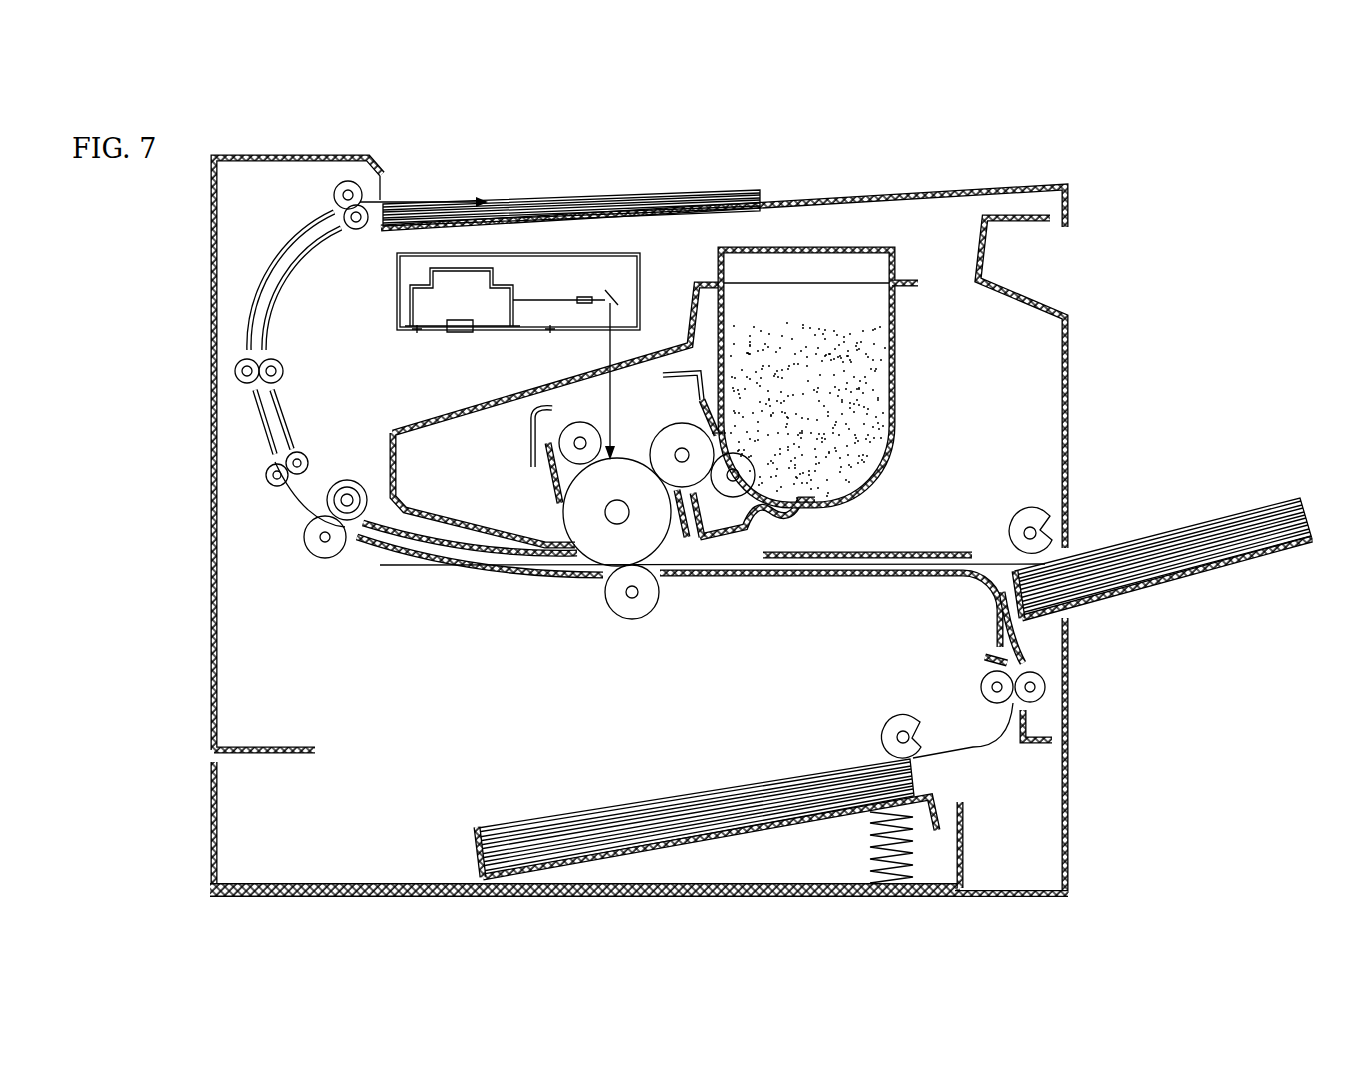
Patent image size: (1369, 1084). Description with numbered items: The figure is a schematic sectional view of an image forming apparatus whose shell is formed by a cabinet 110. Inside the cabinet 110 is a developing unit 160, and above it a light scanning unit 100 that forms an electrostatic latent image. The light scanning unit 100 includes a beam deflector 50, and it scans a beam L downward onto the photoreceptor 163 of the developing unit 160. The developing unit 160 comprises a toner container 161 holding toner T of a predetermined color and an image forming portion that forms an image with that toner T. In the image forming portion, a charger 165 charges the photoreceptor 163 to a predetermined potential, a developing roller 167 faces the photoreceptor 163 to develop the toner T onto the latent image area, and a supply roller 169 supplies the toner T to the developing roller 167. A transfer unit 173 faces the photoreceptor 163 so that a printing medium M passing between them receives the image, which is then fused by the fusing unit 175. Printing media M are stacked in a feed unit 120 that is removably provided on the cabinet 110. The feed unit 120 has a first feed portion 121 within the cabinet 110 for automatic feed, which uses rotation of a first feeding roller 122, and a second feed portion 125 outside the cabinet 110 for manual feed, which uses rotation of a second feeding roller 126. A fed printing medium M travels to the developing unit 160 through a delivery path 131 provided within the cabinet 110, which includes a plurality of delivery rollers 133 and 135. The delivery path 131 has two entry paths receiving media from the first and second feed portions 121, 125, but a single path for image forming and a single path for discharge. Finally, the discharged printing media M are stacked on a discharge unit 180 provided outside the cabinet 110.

The cabinet 110 is at (1078, 348).
The discharge unit 180 is at (950, 192).
The developing unit 160 is at (908, 380).
The toner container 161 is at (895, 316).
The toner T is at (870, 358).
The light scanning unit 100 is at (428, 346).
The beam deflector 50 is at (510, 282).
The beam L is at (608, 352).
The photoreceptor 163 is at (595, 543).
The charger 165 is at (583, 437).
The developing roller 167 is at (675, 436).
The supply roller 169 is at (734, 492).
The transfer unit 173 is at (620, 607).
The fusing unit 175 is at (347, 490).
The delivery path 131 is at (257, 437).
The delivery roller 135 is at (356, 232).
The delivery roller 133 is at (980, 684).
The second feeding roller 126 is at (1042, 518).
The first feeding roller 122 is at (883, 722).
The printing medium M is at (1237, 510).
The second feed portion 125 is at (1157, 582).
The first feed portion 121 is at (940, 798).
The feed unit 120 is at (1188, 678).